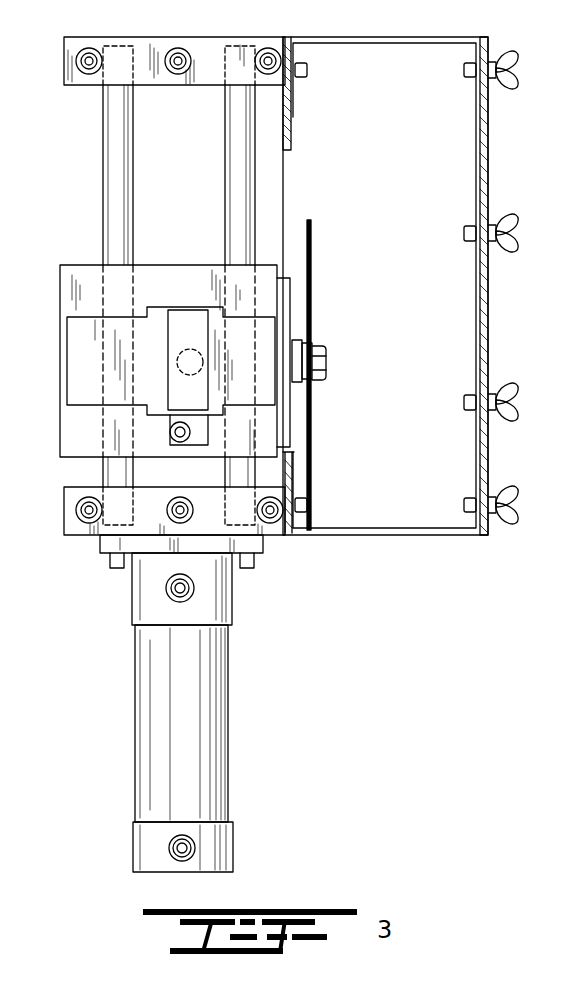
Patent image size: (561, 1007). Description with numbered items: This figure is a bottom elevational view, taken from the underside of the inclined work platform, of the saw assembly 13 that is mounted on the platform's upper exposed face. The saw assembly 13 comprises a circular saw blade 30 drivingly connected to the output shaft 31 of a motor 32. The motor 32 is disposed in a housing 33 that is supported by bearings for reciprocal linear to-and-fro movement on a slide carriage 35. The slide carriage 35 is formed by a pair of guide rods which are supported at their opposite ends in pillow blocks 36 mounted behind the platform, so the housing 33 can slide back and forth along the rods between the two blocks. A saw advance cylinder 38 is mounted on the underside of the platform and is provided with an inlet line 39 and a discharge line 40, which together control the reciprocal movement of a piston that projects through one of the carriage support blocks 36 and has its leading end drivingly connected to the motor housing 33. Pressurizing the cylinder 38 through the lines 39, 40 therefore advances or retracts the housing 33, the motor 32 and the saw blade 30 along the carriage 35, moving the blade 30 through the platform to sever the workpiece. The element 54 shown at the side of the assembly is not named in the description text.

The saw assembly 13 is at (416, 536).
The clamping strip with wing nuts 54 is at (488, 333).
The pillow blocks 36 is at (167, 85).
The slide carriage 35 is at (105, 160).
The motor 32 is at (272, 392).
The housing 33 is at (262, 265).
The circular saw blade 30 is at (312, 258).
The output shaft 31 is at (300, 345).
The saw advance cylinder 38 is at (228, 695).
The discharge line 40 is at (194, 589).
The inlet line 39 is at (195, 846).